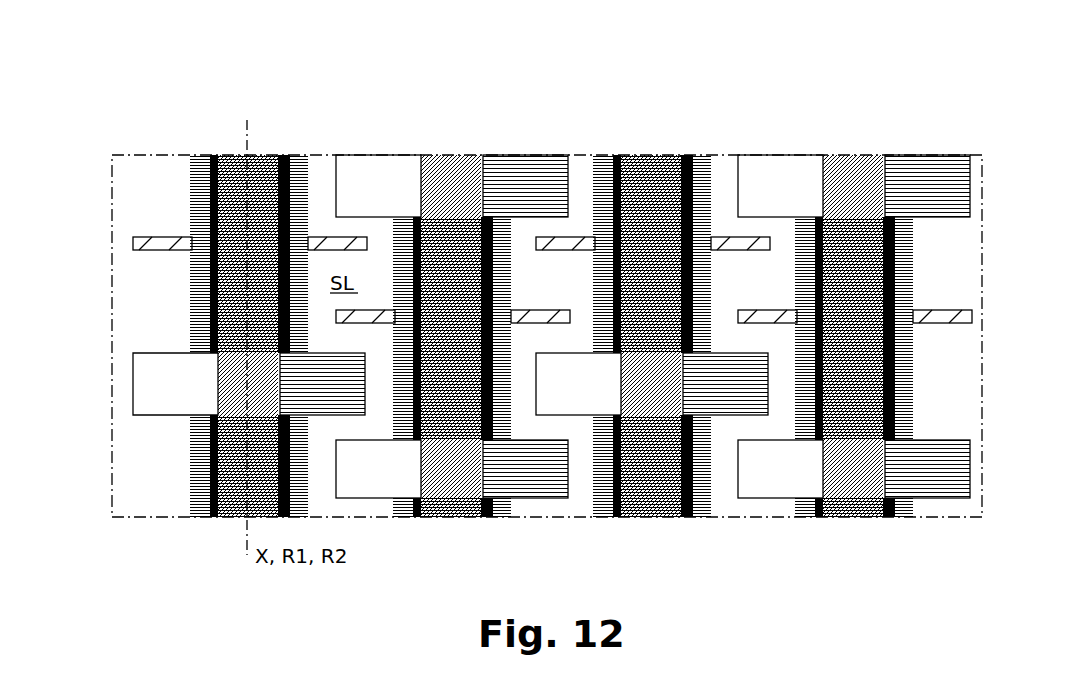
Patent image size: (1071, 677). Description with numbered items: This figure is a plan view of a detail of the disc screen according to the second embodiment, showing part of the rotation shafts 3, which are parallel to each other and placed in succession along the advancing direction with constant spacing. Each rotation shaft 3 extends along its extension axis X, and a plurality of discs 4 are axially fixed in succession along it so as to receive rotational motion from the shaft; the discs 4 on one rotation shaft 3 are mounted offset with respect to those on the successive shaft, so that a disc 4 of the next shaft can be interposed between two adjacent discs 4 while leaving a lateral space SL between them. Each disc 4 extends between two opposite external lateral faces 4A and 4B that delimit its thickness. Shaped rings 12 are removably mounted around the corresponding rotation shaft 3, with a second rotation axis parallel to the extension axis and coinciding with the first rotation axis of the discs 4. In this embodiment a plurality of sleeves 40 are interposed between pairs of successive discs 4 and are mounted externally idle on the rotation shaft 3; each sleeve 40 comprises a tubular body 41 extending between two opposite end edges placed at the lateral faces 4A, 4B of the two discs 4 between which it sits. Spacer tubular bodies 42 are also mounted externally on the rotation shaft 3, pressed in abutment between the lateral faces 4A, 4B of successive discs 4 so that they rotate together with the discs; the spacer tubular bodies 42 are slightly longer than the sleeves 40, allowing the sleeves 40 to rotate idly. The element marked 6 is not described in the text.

The rotation shaft 3 is at (218, 158).
The disc 4 is at (138, 373).
The external lateral face 4A is at (158, 348).
The external lateral face 4B is at (158, 420).
The contact 6 is at (220, 382).
The shaped ring 12 is at (335, 236).
The sleeve 40 is at (180, 200).
The tubular body 41 is at (190, 298).
The spacer tubular body 42 is at (283, 157).